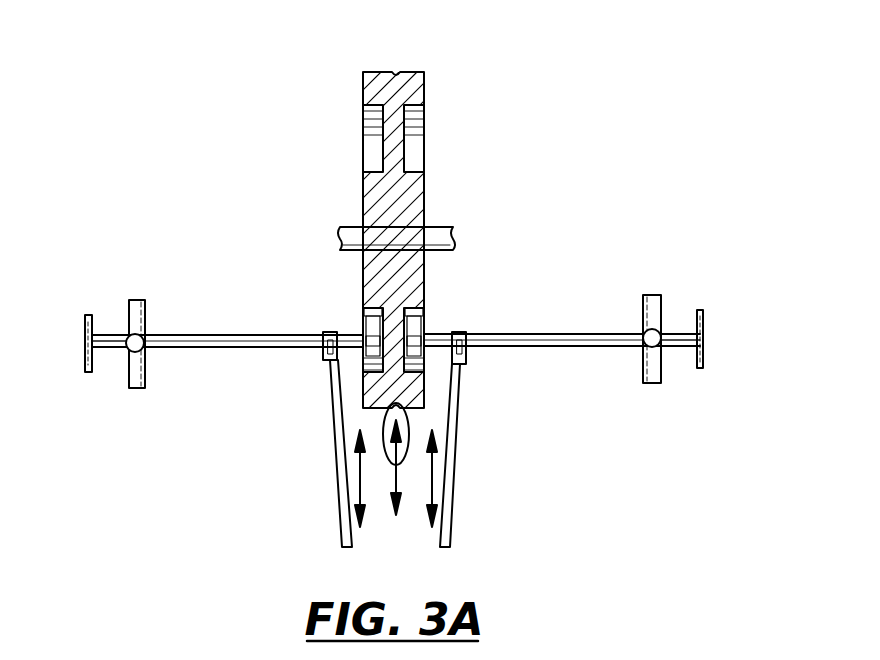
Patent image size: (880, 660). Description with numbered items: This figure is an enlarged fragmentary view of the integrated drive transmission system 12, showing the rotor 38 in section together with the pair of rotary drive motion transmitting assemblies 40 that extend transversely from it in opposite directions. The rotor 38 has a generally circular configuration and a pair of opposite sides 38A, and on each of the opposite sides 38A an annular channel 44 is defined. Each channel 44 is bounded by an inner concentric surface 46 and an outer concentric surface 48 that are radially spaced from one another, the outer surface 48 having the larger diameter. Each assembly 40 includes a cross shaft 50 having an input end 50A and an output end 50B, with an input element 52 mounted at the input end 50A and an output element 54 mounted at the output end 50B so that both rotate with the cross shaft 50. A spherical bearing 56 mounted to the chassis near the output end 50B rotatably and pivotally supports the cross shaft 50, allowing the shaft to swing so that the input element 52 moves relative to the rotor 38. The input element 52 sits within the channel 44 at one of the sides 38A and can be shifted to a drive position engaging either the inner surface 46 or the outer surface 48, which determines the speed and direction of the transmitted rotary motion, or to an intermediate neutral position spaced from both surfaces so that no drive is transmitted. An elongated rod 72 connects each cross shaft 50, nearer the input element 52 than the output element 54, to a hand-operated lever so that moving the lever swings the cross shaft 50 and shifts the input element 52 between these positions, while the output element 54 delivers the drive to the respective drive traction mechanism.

The integrated drive transmission system 12 is at (519, 140).
The rotor 38 is at (405, 71).
The opposite sides 38A is at (363, 90).
The rotary drive motion transmitting assembly 40 is at (400, 333).
The annular channel 44 is at (375, 345).
The inner concentric surface 46 is at (373, 335).
The outer concentric surface 48 is at (372, 372).
The cross shaft 50 is at (238, 347).
The input end 50A is at (357, 343).
The output end 50B is at (116, 348).
The input element 52 is at (372, 360).
The output element 54 is at (90, 335).
The spherical bearing 56 is at (135, 308).
The elongated rod 72 is at (342, 494).